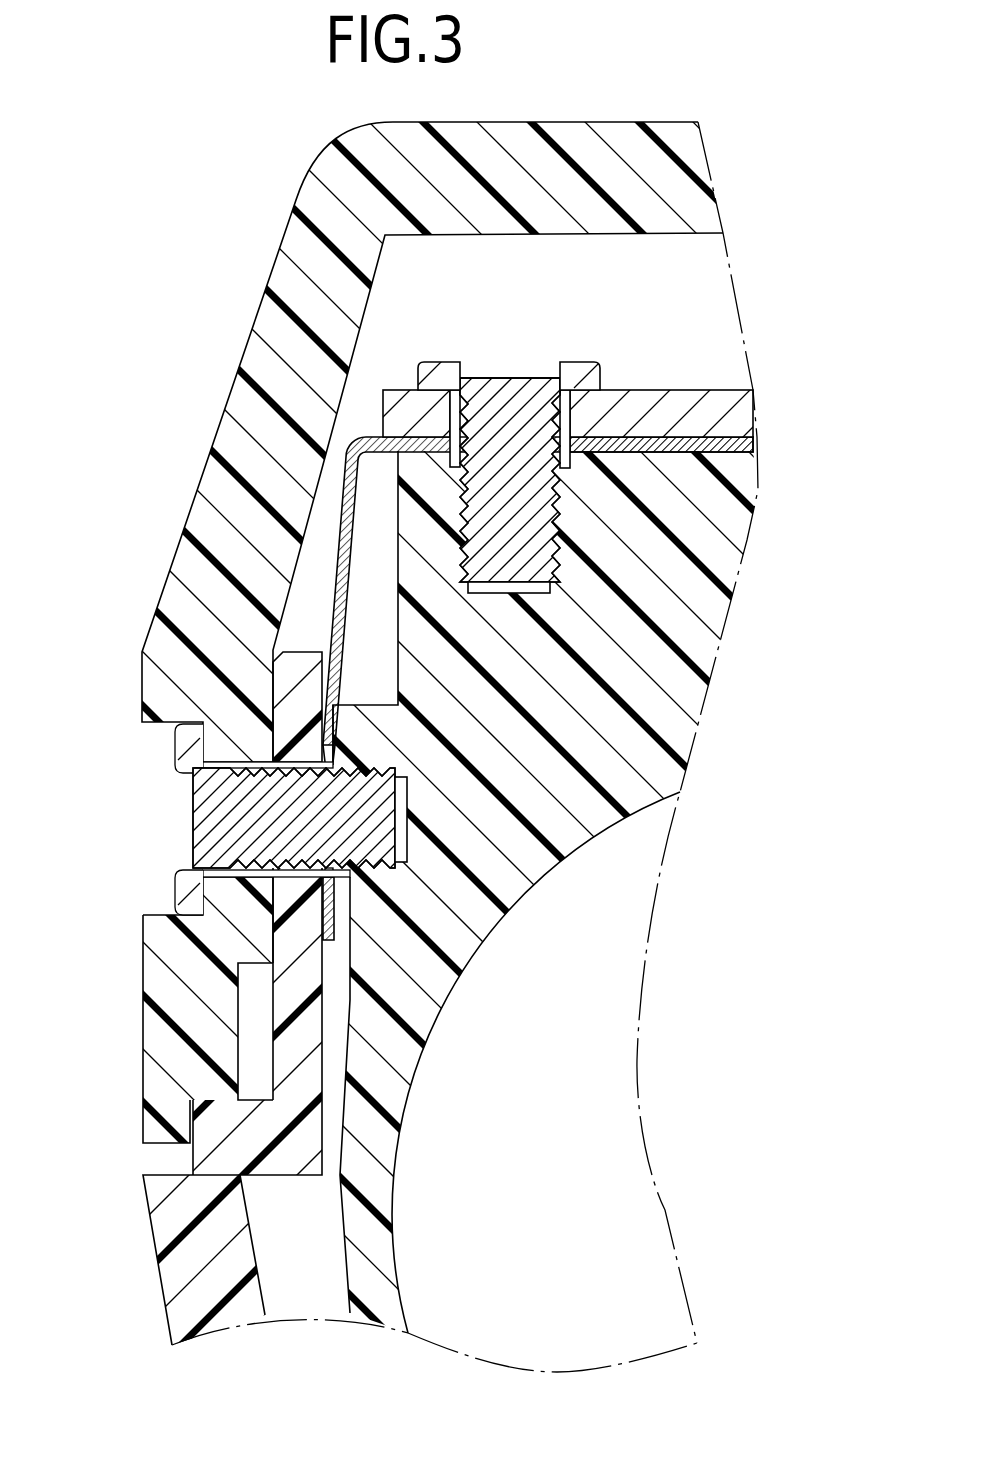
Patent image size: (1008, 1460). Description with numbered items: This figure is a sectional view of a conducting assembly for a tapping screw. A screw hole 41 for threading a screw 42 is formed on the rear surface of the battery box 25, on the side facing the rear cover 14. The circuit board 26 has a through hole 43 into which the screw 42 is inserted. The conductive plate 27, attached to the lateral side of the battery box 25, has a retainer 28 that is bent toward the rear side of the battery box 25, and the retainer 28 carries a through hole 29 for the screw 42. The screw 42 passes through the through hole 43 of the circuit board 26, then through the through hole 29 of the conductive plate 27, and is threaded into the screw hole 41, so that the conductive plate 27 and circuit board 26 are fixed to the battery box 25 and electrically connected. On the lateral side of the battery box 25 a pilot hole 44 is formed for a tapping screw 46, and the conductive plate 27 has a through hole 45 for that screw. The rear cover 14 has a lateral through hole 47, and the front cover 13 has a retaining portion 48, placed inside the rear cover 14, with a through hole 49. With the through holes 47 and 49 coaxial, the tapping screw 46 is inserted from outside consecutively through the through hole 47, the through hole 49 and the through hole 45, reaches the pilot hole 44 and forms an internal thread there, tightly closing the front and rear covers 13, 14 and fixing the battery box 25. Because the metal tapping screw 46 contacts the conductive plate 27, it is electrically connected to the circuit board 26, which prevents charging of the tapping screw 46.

The front cover 13 is at (150, 1265).
The rear cover 14 is at (553, 118).
The battery box 25 is at (452, 1020).
The circuit board 26 is at (723, 387).
The conductive plate 27 is at (322, 503).
The retainer 28 is at (753, 442).
The through hole 29 is at (637, 440).
The screw hole 41 is at (470, 590).
The screw 42 is at (508, 378).
The through hole 43 is at (572, 417).
The pilot hole 44 is at (400, 848).
The through hole 45 is at (335, 708).
The tapping screw 46 is at (193, 818).
The through hole 47 is at (242, 760).
The retaining portion 48 is at (257, 993).
The through hole 49 is at (297, 880).